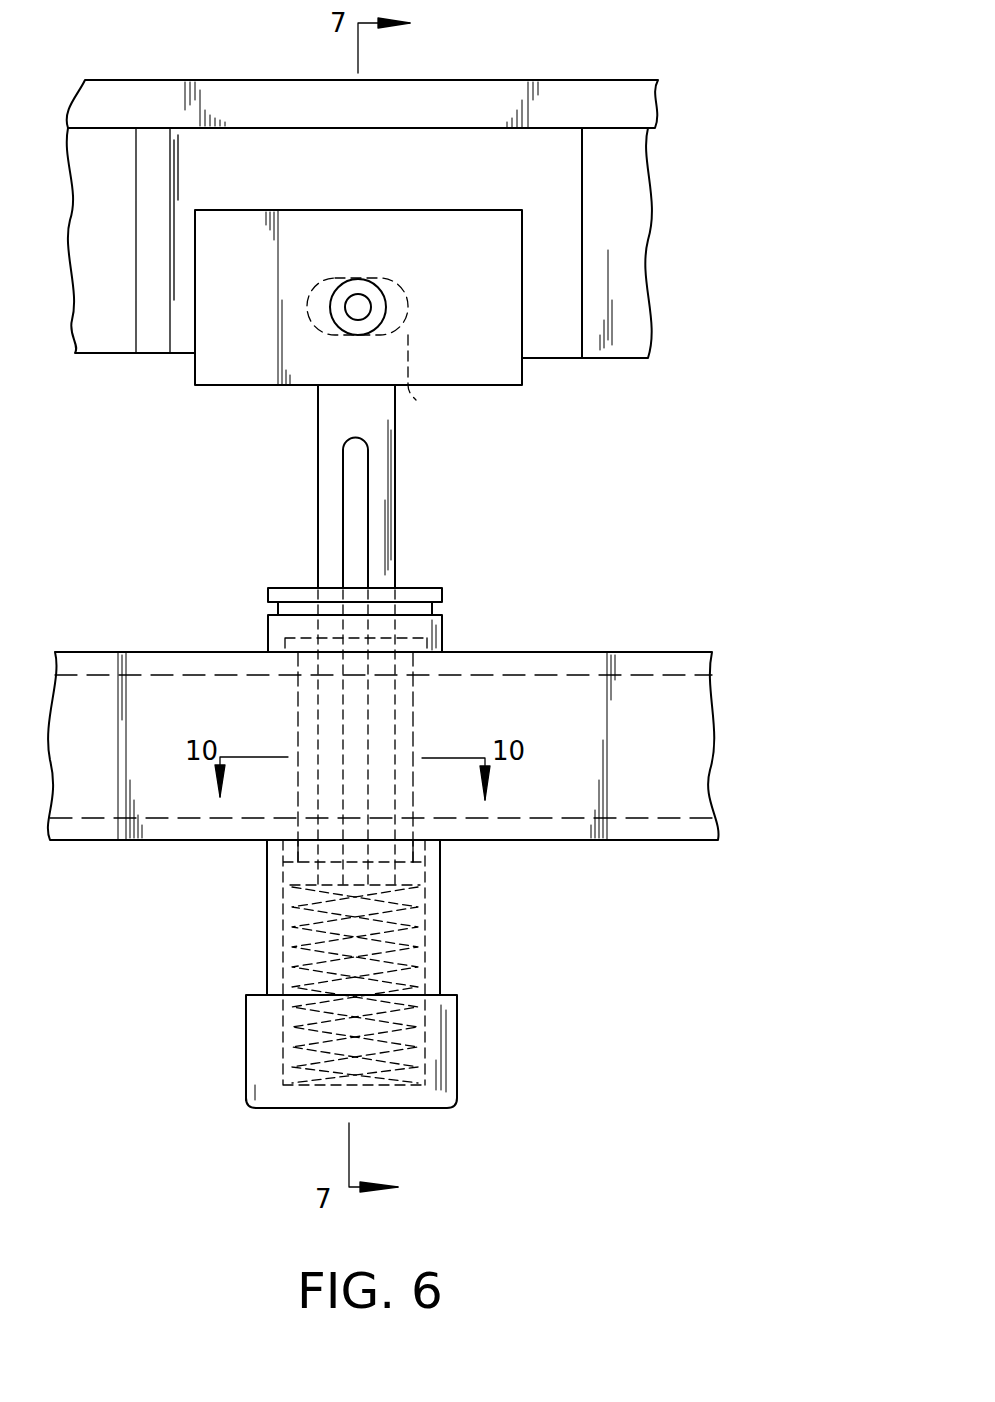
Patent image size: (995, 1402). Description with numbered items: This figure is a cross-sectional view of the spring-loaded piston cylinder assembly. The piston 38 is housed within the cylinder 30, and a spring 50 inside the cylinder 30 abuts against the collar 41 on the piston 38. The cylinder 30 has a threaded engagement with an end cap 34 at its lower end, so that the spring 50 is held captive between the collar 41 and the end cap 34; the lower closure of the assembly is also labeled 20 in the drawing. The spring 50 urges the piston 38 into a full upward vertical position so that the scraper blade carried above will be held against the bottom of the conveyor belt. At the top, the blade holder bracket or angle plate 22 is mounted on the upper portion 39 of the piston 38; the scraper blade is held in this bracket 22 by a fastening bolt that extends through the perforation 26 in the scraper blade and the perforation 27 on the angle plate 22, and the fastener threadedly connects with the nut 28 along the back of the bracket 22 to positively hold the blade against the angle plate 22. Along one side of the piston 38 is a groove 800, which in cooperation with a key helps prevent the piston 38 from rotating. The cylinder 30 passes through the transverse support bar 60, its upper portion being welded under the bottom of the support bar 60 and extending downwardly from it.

The cap 20 is at (457, 1066).
The blade holder bracket 22 is at (500, 385).
The perforation 26 is at (380, 351).
The perforation 27 is at (348, 316).
The nut 28 is at (358, 279).
The cylinder 30 is at (267, 902).
The end cap 34 is at (246, 1057).
The piston 38 is at (318, 478).
The upper portion 39 is at (413, 732).
The collar 41 is at (283, 872).
The spring 50 is at (290, 965).
The support bar 60 is at (685, 700).
The groove 800 is at (360, 500).